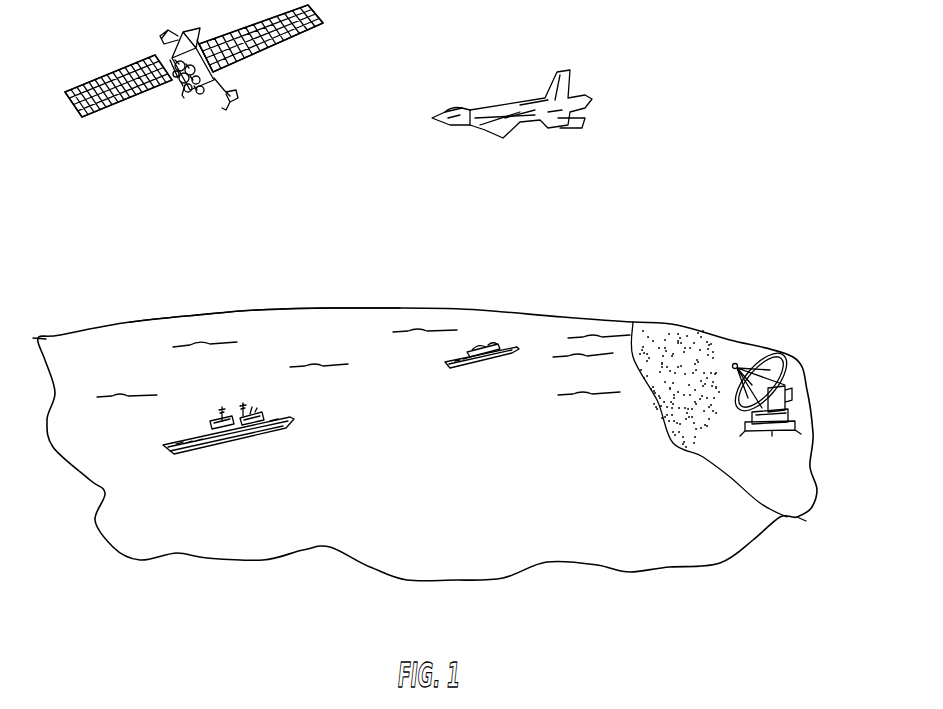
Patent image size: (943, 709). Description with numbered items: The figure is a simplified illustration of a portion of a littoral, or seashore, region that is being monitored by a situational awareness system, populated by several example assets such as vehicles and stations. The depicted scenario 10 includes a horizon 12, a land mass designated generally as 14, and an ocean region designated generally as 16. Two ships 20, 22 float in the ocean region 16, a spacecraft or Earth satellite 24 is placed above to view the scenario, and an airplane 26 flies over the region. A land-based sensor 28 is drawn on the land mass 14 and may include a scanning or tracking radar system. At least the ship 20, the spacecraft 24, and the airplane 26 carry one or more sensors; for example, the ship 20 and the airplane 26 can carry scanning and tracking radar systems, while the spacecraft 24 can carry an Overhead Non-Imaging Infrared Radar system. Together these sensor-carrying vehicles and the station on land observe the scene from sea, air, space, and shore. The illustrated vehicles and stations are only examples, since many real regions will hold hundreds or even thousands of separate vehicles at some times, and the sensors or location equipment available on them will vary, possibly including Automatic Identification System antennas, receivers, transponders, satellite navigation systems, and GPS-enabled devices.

The scenario 10 is at (365, 520).
The horizon 12 is at (307, 310).
The land mass 14 is at (792, 492).
The ocean region 16 is at (452, 467).
The ship 20 is at (242, 438).
The ship 22 is at (507, 355).
The spacecraft or Earth satellite 24 is at (215, 83).
The airplane 26 is at (570, 128).
The land-based sensor 28 is at (760, 430).